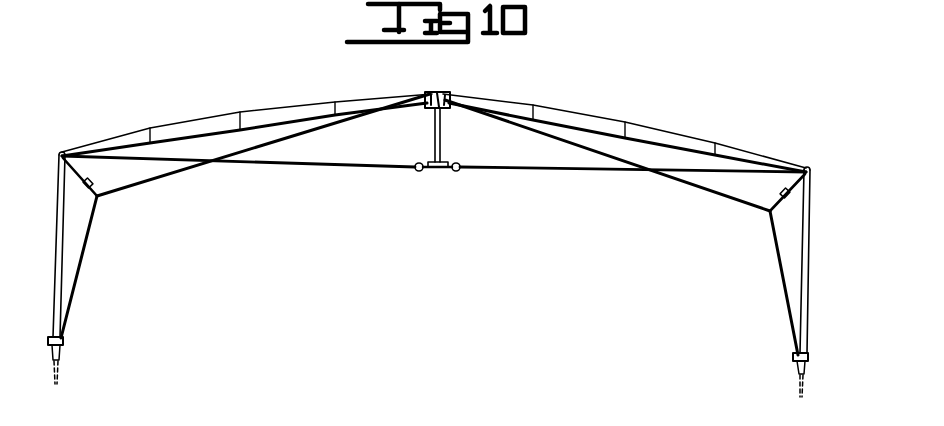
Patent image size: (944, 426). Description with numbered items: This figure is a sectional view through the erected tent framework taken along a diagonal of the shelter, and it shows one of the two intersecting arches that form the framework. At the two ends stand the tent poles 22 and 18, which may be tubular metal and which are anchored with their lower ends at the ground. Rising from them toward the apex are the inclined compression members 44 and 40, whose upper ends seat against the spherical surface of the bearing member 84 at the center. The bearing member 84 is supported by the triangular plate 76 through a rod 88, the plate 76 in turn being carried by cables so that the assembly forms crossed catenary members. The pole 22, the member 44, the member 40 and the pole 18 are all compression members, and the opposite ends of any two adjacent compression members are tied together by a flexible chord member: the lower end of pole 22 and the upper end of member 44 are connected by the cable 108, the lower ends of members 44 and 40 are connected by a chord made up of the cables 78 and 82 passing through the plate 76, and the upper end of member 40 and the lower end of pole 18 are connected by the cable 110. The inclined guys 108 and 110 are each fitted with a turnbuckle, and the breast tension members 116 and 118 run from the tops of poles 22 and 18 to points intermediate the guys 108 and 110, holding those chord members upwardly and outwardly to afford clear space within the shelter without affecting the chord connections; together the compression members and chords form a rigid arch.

The tent pole 18 is at (803, 264).
The tent pole 22 is at (62, 236).
The compression member 40 is at (604, 116).
The compression member 44 is at (228, 110).
The triangular plate 76 is at (437, 174).
The cable 78 is at (344, 170).
The cable 82 is at (566, 172).
The bearing member 84 is at (450, 97).
The rod 88 is at (442, 132).
The cable 108 is at (165, 180).
The cable 110 is at (706, 196).
The breast tension member 116 is at (95, 190).
The breast tension member 118 is at (787, 199).